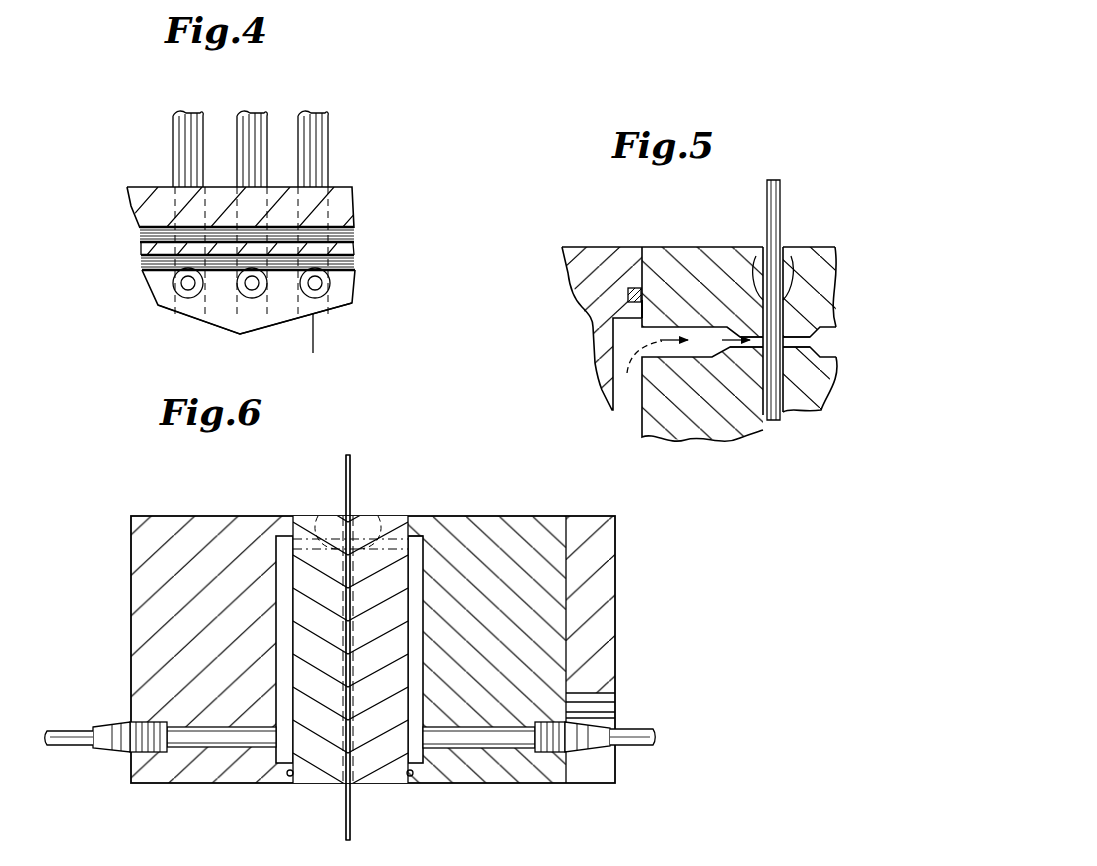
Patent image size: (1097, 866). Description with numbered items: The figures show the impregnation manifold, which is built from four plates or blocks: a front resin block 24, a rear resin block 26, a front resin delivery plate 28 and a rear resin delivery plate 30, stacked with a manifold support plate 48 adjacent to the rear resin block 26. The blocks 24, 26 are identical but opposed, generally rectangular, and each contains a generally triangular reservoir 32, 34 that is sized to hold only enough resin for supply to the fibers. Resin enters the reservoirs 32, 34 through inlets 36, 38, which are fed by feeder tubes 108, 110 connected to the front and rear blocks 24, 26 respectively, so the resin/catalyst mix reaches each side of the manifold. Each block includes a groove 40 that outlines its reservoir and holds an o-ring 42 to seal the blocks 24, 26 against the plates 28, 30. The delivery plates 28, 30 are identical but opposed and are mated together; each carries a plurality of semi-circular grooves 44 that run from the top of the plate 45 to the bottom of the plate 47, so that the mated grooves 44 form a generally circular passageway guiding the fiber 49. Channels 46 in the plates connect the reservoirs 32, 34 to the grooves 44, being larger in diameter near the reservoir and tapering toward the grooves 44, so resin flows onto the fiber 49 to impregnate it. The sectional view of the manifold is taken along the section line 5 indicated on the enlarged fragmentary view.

In FIG. 4, the section line 5— 5 is at (332, 153).
In FIG. 4, the front resin block 24 is at (142, 196).
In FIG. 5, the front resin block 24 is at (568, 277).
In FIG. 6, the front resin block 24 is at (215, 523).
In FIG. 6, the rear resin block 26 is at (503, 526).
In FIG. 4, the front resin delivery plate 28 is at (233, 314).
In FIG. 5, the front resin delivery plate 28 is at (711, 445).
In FIG. 6, the front resin delivery plate 28 is at (336, 516).
In FIG. 5, the rear resin delivery plate 30 is at (790, 393).
In FIG. 6, the rear resin delivery plate 30 is at (400, 536).
In FIG. 6, the reservoir 32 is at (279, 536).
In FIG. 5, the reservoir 34 is at (623, 412).
In FIG. 6, the reservoir 34 is at (430, 536).
In FIG. 6, the inlet 36 is at (505, 748).
In FIG. 6, the inlet 38 is at (230, 742).
In FIG. 4, the groove 40 is at (146, 259).
In FIG. 5, the groove 40 is at (642, 299).
In FIG. 6, the groove 40 is at (290, 777).
In FIG. 4, the o-ring 42 is at (141, 232).
In FIG. 5, the o-ring 42 is at (630, 287).
In FIG. 5, the grooves 44 is at (762, 272).
In FIG. 6, the grooves 44 is at (347, 455).
In FIG. 6, the top of the plate 45 is at (353, 522).
In FIG. 4, the channels 46 is at (182, 284).
In FIG. 5, the channels 46 is at (735, 358).
In FIG. 6, the channels 46 is at (338, 526).
In FIG. 6, the bottom of the plate 47 is at (410, 777).
In FIG. 6, the manifold support plate 48 is at (597, 530).
In FIG. 4, the fiber 49 is at (248, 113).
In FIG. 5, the fiber 49 is at (779, 182).
In FIG. 6, the fiber 49 is at (352, 458).
In FIG. 6, the feeder tube 108 is at (76, 742).
In FIG. 6, the feeder tube 110 is at (630, 746).